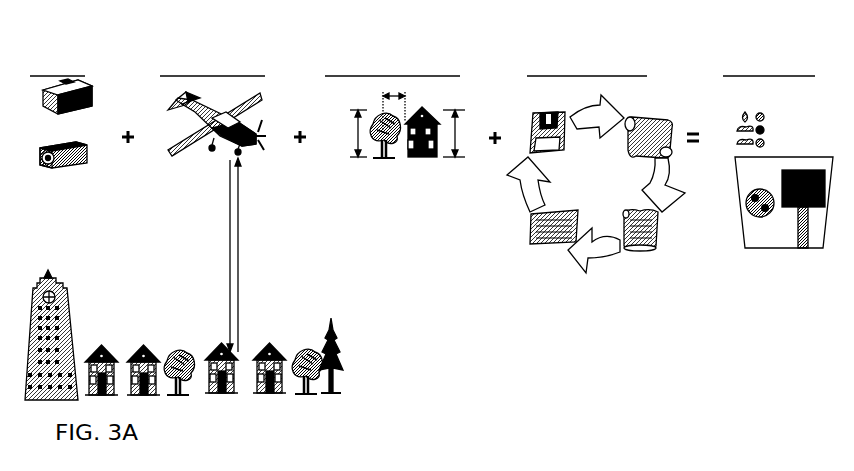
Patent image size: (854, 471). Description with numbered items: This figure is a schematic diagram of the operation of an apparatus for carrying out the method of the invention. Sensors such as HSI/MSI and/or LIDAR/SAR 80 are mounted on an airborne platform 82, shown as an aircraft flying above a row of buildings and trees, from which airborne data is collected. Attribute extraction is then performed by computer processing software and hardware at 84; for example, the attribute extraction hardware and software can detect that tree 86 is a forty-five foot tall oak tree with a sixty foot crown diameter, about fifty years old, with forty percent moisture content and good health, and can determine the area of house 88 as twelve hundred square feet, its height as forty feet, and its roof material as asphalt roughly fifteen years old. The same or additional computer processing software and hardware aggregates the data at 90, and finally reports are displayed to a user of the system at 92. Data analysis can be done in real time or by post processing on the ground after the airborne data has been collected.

The sensors 80 is at (61, 105).
The airborne platform 82 is at (213, 187).
The attribute extraction hardware and software 84 is at (396, 122).
The tree 86 is at (373, 163).
The house 88 is at (432, 165).
The data aggregation 90 is at (596, 148).
The report display 92 is at (778, 143).